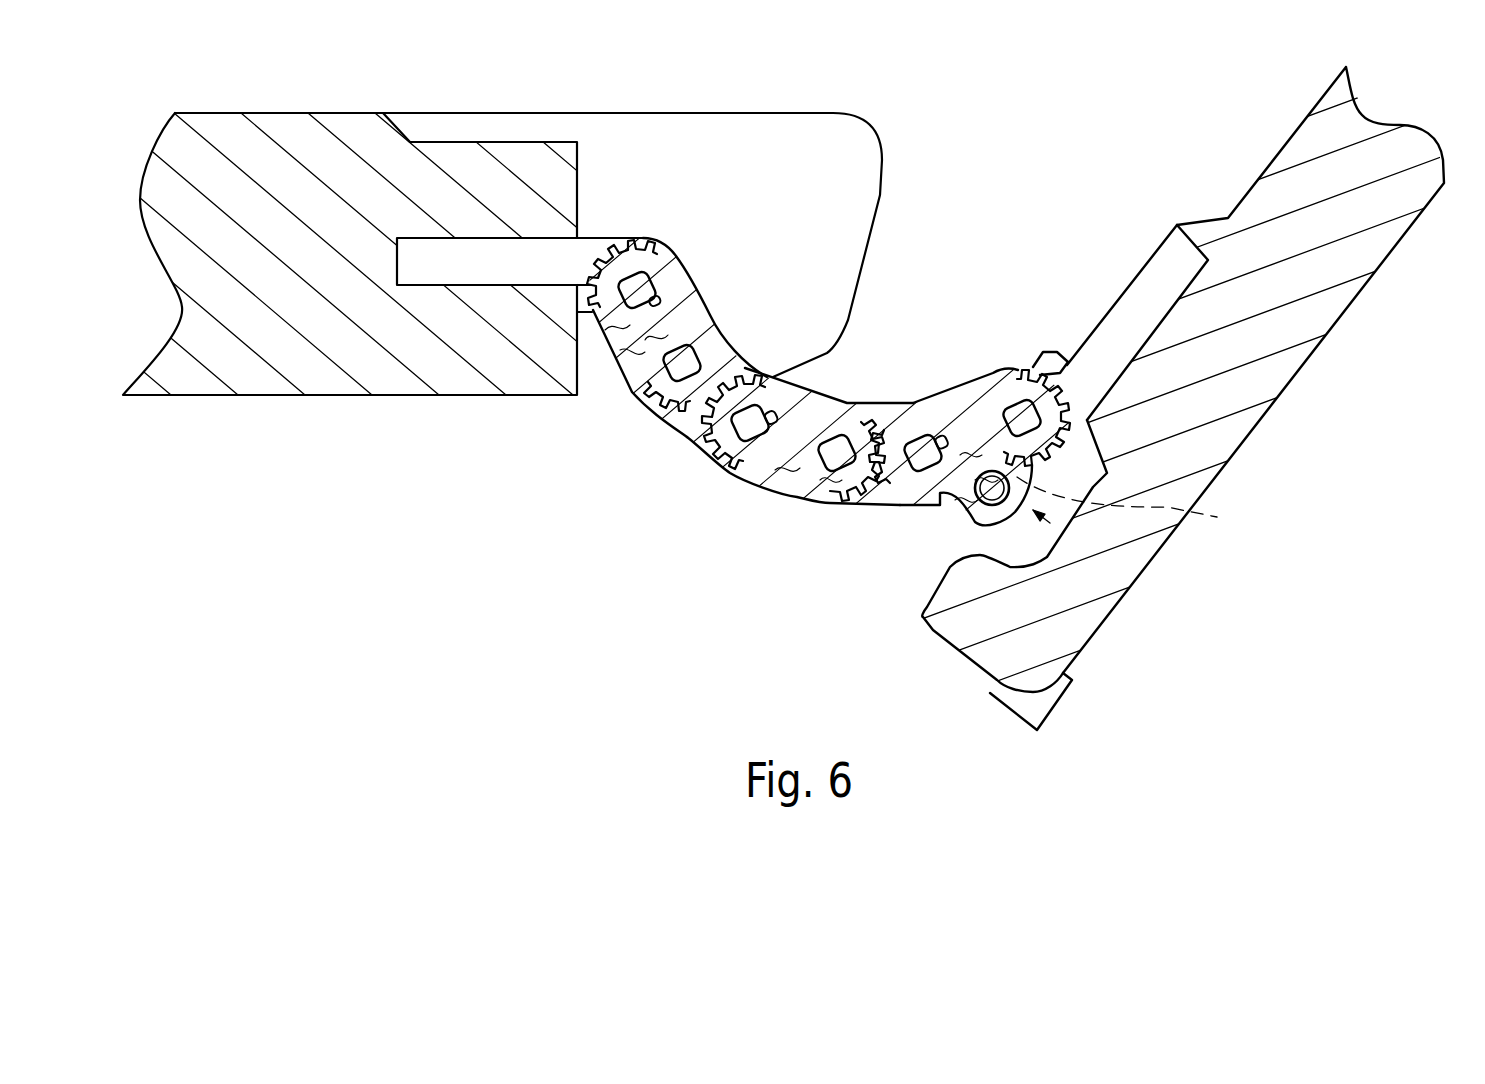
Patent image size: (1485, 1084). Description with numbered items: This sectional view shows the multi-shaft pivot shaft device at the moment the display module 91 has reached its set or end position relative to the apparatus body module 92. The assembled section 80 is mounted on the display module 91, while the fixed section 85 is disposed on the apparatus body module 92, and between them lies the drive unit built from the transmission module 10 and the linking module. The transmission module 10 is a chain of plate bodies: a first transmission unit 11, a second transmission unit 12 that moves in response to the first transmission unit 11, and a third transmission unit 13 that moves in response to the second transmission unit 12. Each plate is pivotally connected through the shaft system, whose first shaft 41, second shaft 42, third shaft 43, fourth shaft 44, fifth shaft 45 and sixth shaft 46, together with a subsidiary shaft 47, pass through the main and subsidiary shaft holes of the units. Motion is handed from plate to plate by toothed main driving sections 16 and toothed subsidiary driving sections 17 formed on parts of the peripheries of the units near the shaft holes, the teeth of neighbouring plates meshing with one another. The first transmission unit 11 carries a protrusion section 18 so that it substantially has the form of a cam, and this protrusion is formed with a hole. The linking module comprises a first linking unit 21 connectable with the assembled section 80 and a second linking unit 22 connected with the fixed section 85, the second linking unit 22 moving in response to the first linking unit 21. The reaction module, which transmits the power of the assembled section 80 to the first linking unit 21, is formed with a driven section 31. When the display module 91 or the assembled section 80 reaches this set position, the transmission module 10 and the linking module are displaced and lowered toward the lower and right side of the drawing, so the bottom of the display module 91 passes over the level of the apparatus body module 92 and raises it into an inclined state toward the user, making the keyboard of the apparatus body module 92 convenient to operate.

The transmission module 10 is at (753, 522).
The first transmission unit 11 is at (1047, 557).
The second transmission unit 12 is at (787, 500).
The third transmission unit 13 is at (613, 370).
The toothed main driving section 16 is at (683, 417).
The toothed subsidiary driving section 17 is at (706, 432).
The protrusion section 18 is at (1005, 515).
The first linking unit 21 is at (873, 507).
The second linking unit 22 is at (752, 345).
The driven section 31 is at (1207, 510).
The first shaft 41 is at (1020, 397).
The second shaft 42 is at (943, 490).
The third shaft 43 is at (840, 402).
The fourth shaft 44 is at (750, 434).
The fifth shaft 45 is at (690, 358).
The sixth shaft 46 is at (640, 282).
The subsidiary shaft 47 is at (997, 505).
The assembled section 80 is at (1170, 273).
The fixed section 85 is at (430, 268).
The display module 91 is at (1300, 157).
The apparatus body module 92 is at (245, 372).